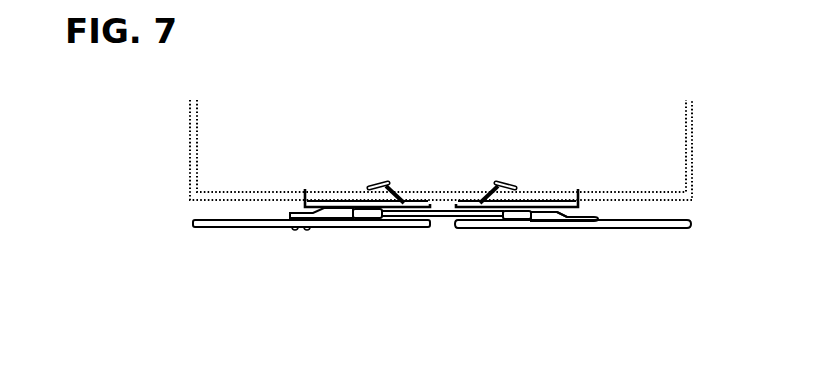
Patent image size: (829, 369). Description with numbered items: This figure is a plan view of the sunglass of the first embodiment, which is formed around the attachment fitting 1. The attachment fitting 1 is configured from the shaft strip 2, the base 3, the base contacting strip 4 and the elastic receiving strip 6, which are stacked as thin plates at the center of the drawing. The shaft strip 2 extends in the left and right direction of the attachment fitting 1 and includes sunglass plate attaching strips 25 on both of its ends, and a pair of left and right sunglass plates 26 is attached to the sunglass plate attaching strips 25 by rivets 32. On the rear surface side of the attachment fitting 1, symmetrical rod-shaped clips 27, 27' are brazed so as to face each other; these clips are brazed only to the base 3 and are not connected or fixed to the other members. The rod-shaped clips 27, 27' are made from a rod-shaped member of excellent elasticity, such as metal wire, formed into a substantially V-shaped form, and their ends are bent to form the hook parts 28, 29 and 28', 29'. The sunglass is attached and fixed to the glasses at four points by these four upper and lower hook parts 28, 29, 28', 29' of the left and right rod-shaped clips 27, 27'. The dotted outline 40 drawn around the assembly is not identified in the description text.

The attachment fitting 1 is at (445, 220).
The shaft strip 2 is at (552, 216).
The base 3 is at (473, 216).
The base contacting strip 4 is at (522, 216).
The elastic receiving strip 6 is at (364, 218).
The sunglass plate attaching strip 25 is at (592, 216).
The sunglass plate 26 is at (675, 224).
The rod-shaped clip 27 is at (367, 163).
The rod-shaped clip 27' is at (517, 166).
The hook part 28 is at (349, 153).
The hook part 28' is at (541, 152).
The hook part 29 is at (375, 148).
The hook part 29' is at (514, 145).
The rivet 32 is at (573, 216).
The lid (phantom) 40 is at (638, 200).